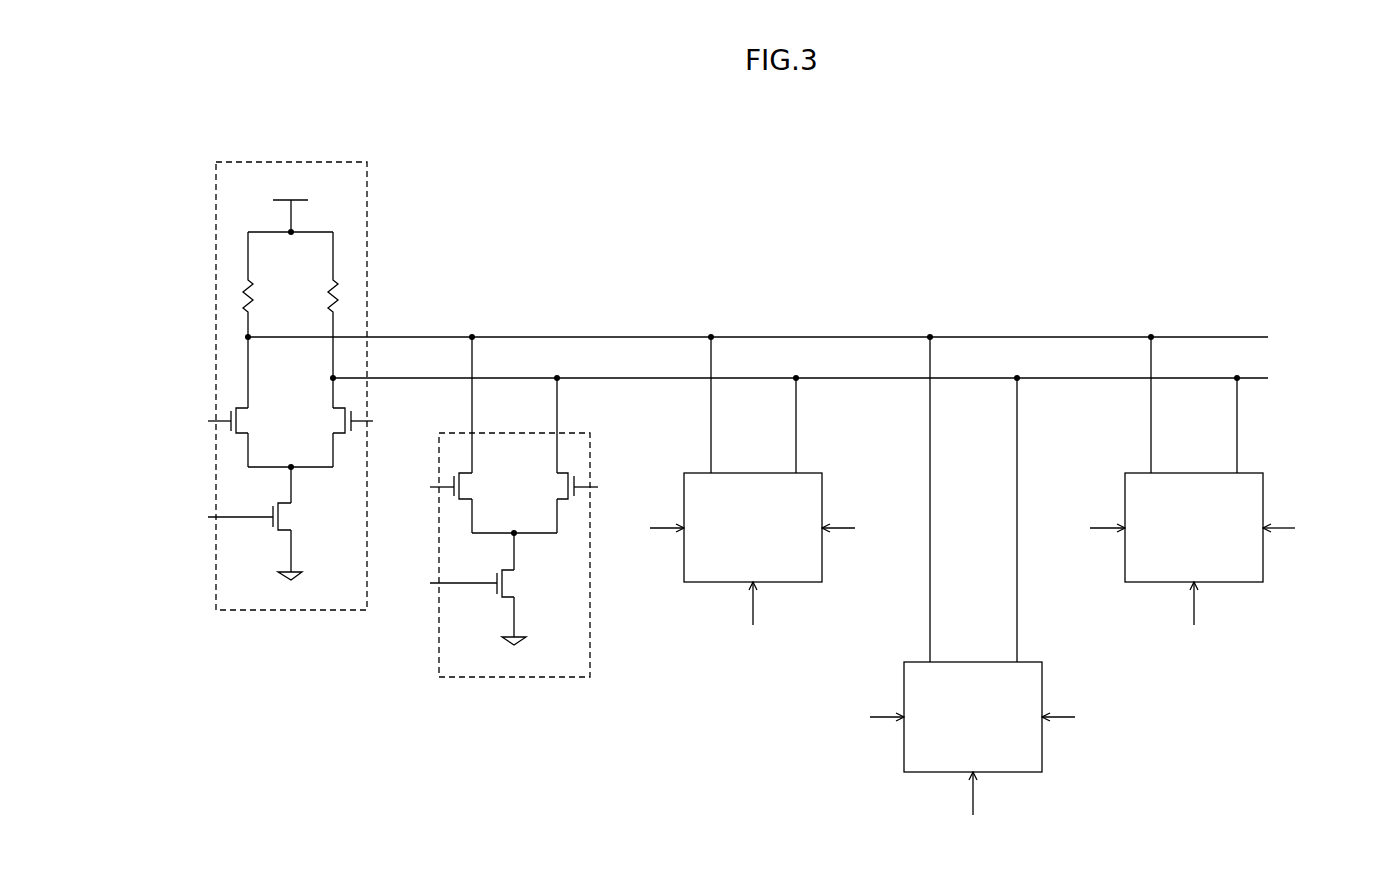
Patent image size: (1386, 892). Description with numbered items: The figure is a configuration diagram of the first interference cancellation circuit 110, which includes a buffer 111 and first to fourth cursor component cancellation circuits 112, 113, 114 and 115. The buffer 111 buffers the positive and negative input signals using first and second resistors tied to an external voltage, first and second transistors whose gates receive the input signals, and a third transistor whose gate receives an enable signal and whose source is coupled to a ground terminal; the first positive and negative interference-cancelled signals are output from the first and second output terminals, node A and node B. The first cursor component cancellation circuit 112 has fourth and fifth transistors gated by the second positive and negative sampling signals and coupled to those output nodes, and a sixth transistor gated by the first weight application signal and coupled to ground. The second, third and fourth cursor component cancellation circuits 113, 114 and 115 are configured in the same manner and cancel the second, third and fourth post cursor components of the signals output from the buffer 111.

The first interference cancellation circuit 110 is at (1310, 107).
The buffer 111 is at (343, 162).
The first cursor component cancellation circuit 112 is at (565, 433).
The second cursor component cancellation circuit 113 is at (822, 478).
The third cursor component cancellation circuit 114 is at (1042, 668).
The fourth cursor component cancellation circuit 115 is at (1263, 478).